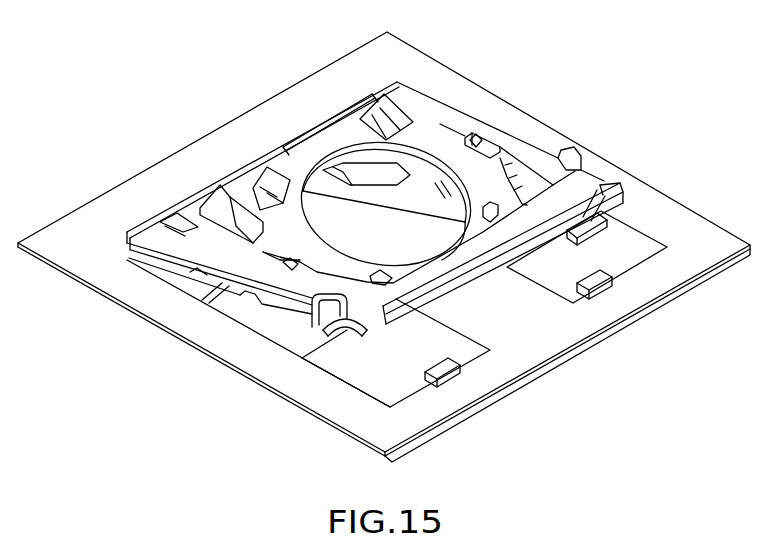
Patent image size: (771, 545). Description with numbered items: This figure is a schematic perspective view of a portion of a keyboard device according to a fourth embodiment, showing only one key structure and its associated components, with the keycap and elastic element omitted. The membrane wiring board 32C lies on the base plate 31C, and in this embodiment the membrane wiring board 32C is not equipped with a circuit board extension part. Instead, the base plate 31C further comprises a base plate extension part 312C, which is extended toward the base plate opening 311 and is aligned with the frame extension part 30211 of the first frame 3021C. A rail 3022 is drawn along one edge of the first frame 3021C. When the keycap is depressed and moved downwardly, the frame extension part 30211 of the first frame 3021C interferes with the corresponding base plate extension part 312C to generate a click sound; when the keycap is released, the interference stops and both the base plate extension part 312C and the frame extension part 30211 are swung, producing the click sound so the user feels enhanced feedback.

The rail of frame 3022 is at (305, 157).
The first frame 3021C is at (473, 127).
The frame extension part 30211 is at (583, 220).
The base plate opening 311 is at (623, 250).
The base plate extension part 312C is at (599, 281).
The membrane wiring board 32C is at (592, 341).
The base plate 31C is at (552, 371).